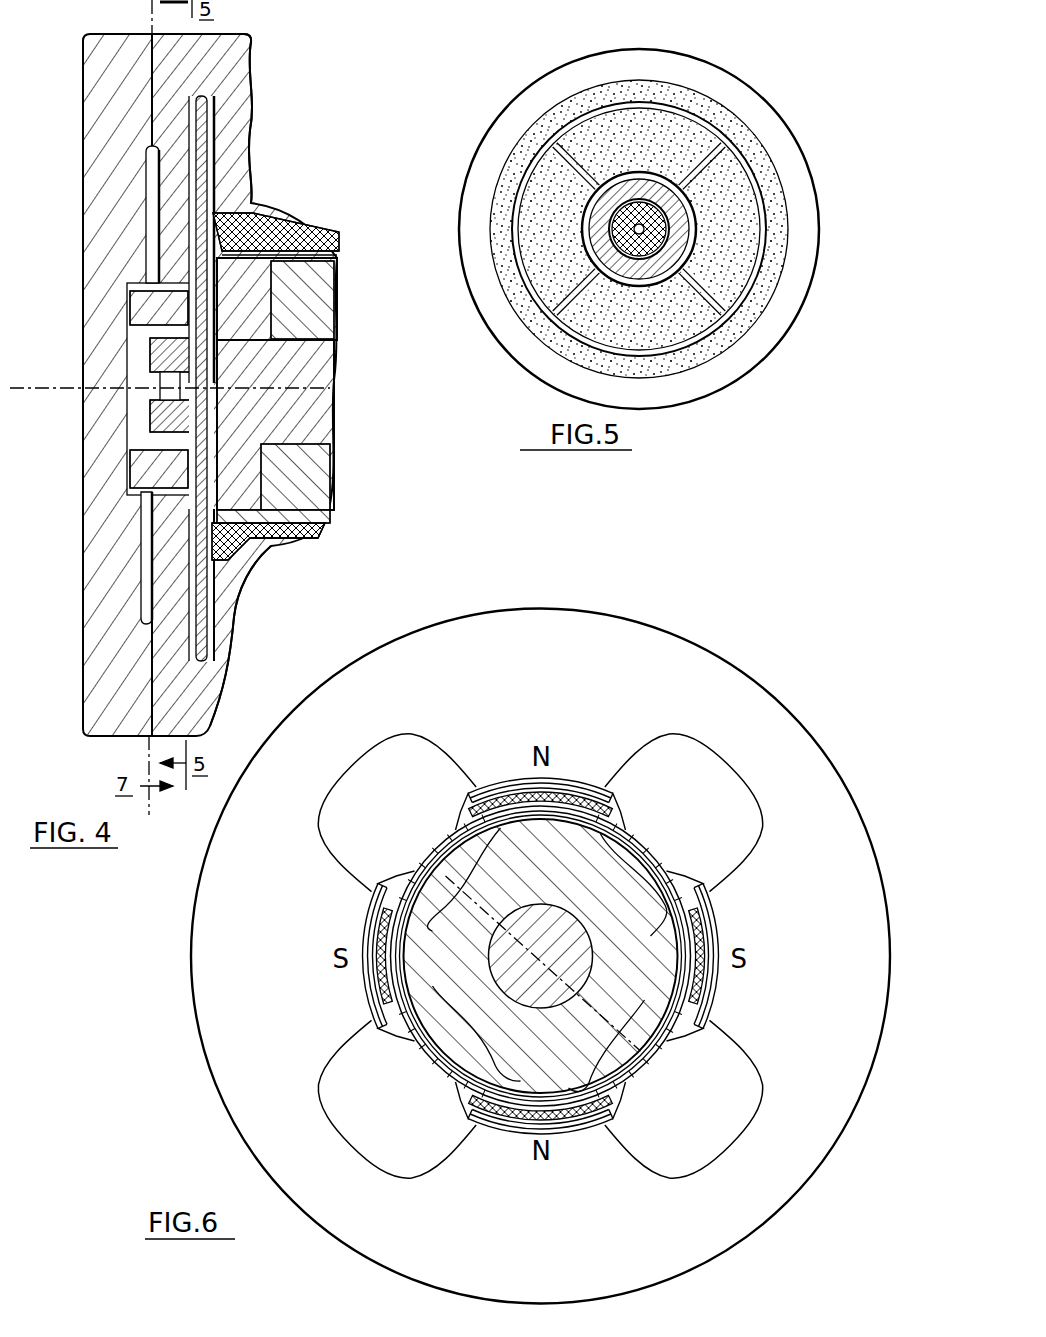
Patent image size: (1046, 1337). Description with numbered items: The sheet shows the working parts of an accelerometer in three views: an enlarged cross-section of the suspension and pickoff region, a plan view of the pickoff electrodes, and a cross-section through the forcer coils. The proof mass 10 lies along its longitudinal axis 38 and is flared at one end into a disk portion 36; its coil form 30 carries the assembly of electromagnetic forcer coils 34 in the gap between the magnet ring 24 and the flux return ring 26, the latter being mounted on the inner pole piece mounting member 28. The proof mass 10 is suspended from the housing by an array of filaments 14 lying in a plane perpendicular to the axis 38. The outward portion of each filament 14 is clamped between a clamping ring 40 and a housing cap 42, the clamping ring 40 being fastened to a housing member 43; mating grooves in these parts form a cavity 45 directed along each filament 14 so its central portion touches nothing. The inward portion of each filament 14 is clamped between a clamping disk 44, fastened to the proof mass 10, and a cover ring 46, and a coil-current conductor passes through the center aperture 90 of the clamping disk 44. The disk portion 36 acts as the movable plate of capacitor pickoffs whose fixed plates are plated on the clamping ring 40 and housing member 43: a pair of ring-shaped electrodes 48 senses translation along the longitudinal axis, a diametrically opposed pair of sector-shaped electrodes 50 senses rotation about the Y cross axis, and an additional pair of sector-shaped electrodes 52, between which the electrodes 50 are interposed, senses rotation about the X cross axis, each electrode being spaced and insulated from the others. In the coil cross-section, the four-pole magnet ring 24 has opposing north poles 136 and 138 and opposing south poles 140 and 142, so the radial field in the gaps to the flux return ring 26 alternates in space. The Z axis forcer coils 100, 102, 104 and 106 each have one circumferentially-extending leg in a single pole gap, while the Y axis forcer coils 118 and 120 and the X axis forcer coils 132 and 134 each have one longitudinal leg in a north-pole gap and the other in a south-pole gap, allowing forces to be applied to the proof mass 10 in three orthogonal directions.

In FIG. 4, the proof mass 10 is at (335, 250).
In FIG. 4, the filaments 14 is at (147, 172).
In FIG. 6, the magnet ring 24 is at (540, 956).
In FIG. 4, the flux return ring 26 is at (300, 300).
In FIG. 6, the flux return ring 26 is at (541, 956).
In FIG. 4, the inner pole piece mounting member 28 is at (290, 432).
In FIG. 6, the inner pole piece mounting member 28 is at (541, 956).
In FIG. 4, the coil form 30 is at (315, 518).
In FIG. 6, the coil form 30 is at (541, 936).
In FIG. 4, the electromagnetic forcer coils 34 is at (312, 535).
In FIG. 4, the disk portion 36 is at (236, 603).
In FIG. 4, the longitudinal axis 38 is at (58, 390).
In FIG. 4, the clamping ring 40 is at (168, 660).
In FIG. 5, the clamping ring 40 is at (644, 229).
In FIG. 4, the housing cap 42 is at (108, 152).
In FIG. 4, the housing member 43 is at (250, 38).
In FIG. 4, the clamping disk 44 is at (150, 434).
In FIG. 4, the cavity 45 is at (143, 236).
In FIG. 4, the cover ring 46 is at (130, 462).
In FIG. 4, the ring-shaped electrodes 48 is at (191, 136).
In FIG. 5, the ring-shaped electrodes 48 is at (639, 191).
In FIG. 4, the sector-shaped electrodes 50 is at (205, 178).
In FIG. 5, the sector-shaped electrodes 50 is at (639, 215).
In FIG. 5, the sector-shaped electrodes 52 is at (642, 229).
In FIG. 4, the center aperture 90 is at (175, 392).
In FIG. 6, the Z axis forcer coil 100 is at (693, 802).
In FIG. 6, the Z axis forcer coil 102 is at (387, 802).
In FIG. 6, the Z axis forcer coil 104 is at (387, 1109).
In FIG. 6, the Z axis forcer coil 106 is at (693, 1109).
In FIG. 6, the Y axis forcer coil 118 is at (620, 885).
In FIG. 6, the Y axis forcer coil 120 is at (477, 1033).
In FIG. 6, the X axis forcer coil 132 is at (464, 879).
In FIG. 6, the X axis forcer coil 134 is at (607, 1041).
In FIG. 6, the north pole 136 is at (541, 778).
In FIG. 6, the north pole 138 is at (541, 1136).
In FIG. 6, the south pole 140 is at (358, 956).
In FIG. 6, the south pole 142 is at (741, 948).